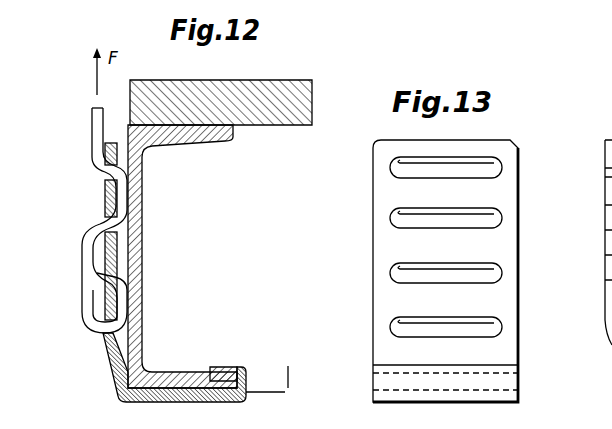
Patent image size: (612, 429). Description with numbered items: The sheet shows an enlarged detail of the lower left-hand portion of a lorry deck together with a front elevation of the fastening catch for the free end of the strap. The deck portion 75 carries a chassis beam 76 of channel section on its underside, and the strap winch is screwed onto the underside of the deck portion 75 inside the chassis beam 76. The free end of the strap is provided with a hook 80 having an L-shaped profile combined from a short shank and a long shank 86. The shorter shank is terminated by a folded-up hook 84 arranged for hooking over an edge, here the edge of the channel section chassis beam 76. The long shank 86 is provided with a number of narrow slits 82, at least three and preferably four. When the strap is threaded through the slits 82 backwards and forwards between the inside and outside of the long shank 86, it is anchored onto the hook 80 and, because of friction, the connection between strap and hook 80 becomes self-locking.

In FIG. 12, the deck portion 75 is at (312, 97).
In FIG. 12, the chassis beam 76 is at (137, 246).
In FIG. 12, the hook 80 is at (108, 368).
In FIG. 13, the hook 80 is at (594, 190).
In FIG. 13, the slits 82 is at (400, 162).
In FIG. 12, the folded-up hook 84 is at (259, 340).
In FIG. 13, the long shank 86 is at (398, 243).